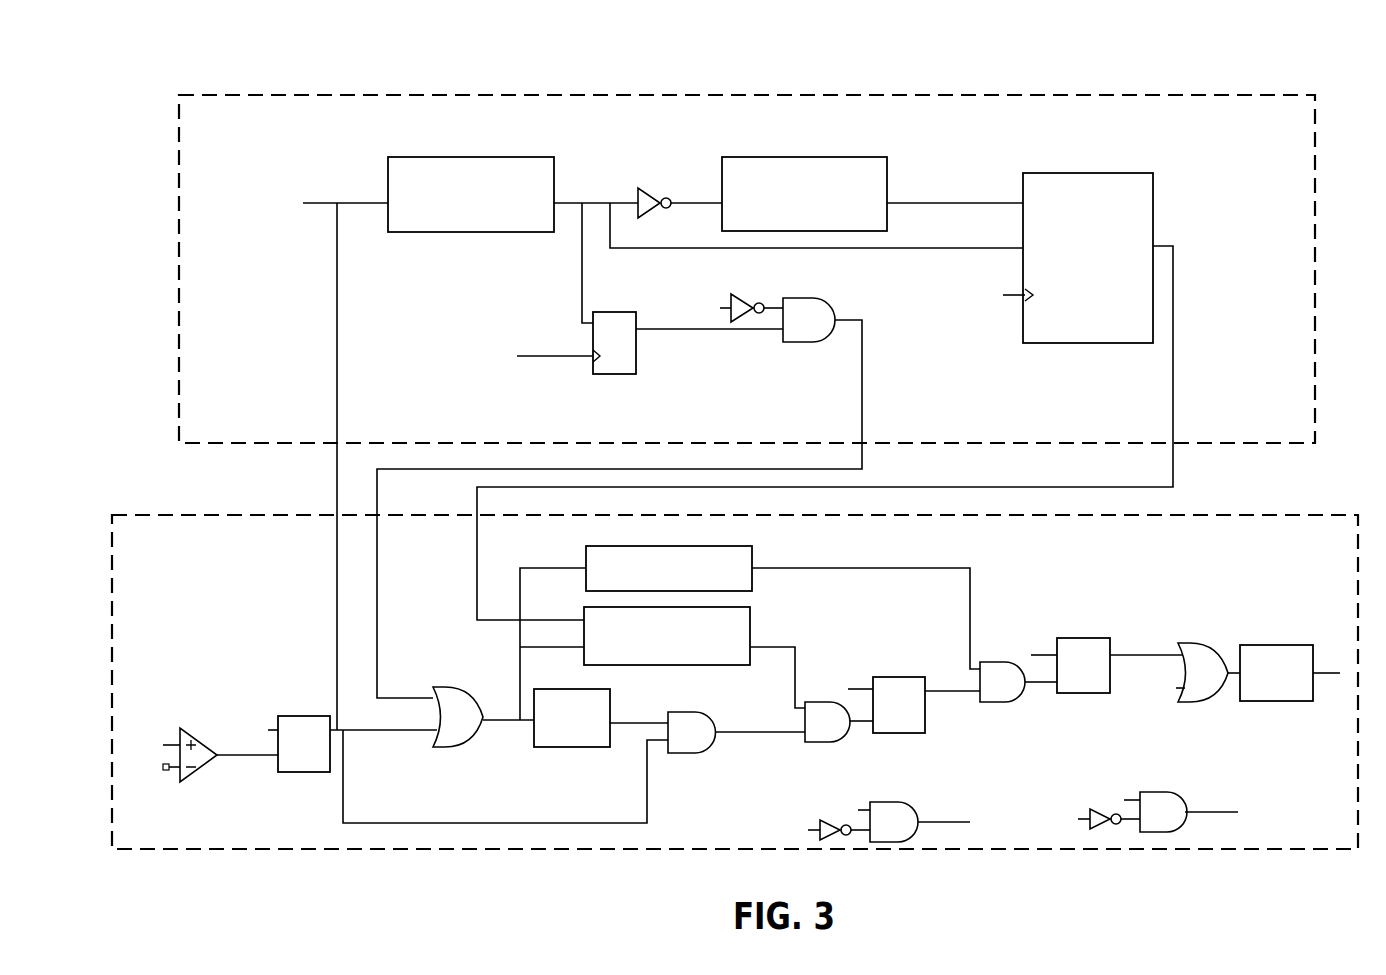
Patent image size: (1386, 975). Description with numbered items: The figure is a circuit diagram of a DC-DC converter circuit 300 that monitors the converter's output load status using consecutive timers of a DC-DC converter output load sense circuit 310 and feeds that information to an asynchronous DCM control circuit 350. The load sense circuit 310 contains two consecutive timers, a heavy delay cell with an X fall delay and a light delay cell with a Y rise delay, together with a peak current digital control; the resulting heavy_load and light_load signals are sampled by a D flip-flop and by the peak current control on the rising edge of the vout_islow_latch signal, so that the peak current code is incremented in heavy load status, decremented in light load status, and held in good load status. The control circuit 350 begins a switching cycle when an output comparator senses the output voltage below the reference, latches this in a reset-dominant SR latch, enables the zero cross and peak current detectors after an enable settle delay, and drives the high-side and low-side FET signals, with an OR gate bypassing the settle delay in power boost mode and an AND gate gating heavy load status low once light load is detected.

The circuit 300 is at (212, 56).
The DC-DC converter output load sense circuit 310 is at (216, 165).
The control circuit 350 is at (152, 609).